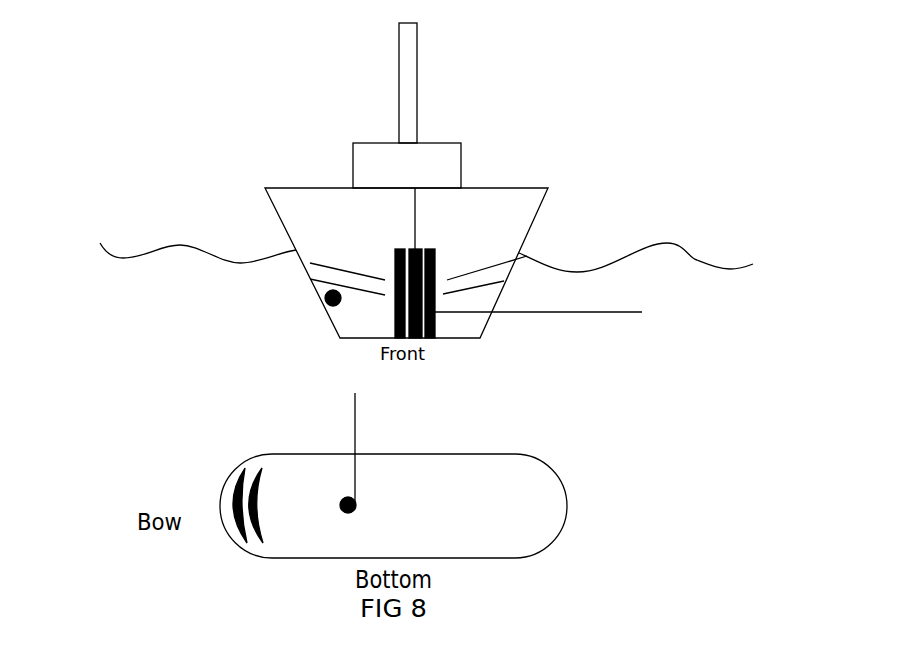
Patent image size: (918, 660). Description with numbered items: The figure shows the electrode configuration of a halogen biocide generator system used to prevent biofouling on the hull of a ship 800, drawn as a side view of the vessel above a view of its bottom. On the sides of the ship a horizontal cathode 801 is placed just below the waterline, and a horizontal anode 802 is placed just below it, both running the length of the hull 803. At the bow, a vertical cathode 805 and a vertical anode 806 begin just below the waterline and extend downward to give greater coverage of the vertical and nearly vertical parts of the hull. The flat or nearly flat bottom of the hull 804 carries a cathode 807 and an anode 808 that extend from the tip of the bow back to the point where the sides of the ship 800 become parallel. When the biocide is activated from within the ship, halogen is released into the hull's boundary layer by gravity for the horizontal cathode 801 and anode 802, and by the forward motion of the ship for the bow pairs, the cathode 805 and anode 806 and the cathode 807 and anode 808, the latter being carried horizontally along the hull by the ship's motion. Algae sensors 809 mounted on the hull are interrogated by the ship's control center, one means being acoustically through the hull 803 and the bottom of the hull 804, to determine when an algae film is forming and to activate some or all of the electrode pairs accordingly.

The ship 800 is at (407, 180).
The horizontal cathode 801 is at (527, 256).
The horizontal anode 802 is at (492, 283).
The hull 803 is at (310, 245).
The bottom of the hull 804 is at (490, 515).
The vertical cathode 805 is at (415, 250).
The anode 806 is at (548, 298).
The cathode 807 is at (234, 508).
The anode 808 is at (265, 483).
The algae sensors 809 is at (340, 300).